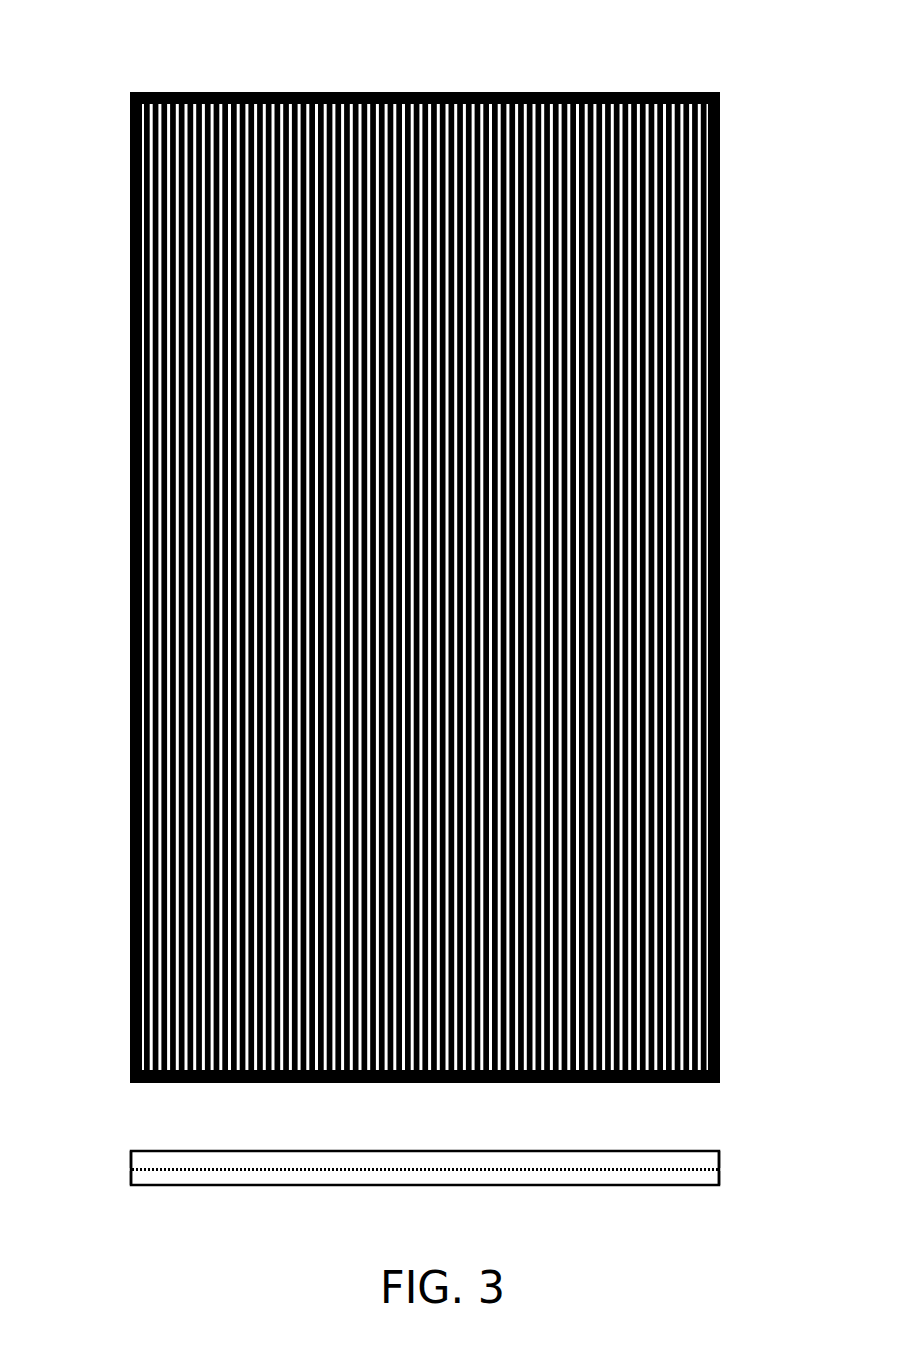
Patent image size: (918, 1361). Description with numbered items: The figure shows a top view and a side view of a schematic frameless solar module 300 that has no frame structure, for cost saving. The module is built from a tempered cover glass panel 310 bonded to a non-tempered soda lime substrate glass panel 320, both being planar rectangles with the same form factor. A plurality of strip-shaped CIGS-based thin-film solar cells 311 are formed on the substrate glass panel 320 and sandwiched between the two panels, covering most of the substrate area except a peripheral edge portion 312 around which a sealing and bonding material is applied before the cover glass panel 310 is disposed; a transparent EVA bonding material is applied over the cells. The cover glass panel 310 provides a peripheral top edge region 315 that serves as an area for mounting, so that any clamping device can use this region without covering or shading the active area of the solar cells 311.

The frameless solar module 300 is at (455, 53).
The cover glass panel 310 is at (134, 1160).
The CIGS-based thin-film solar cells 311 is at (385, 1168).
The peripheral edge portion 312 is at (720, 1170).
The peripheral top edge region 315 is at (131, 941).
The substrate glass panel 320 is at (131, 1180).